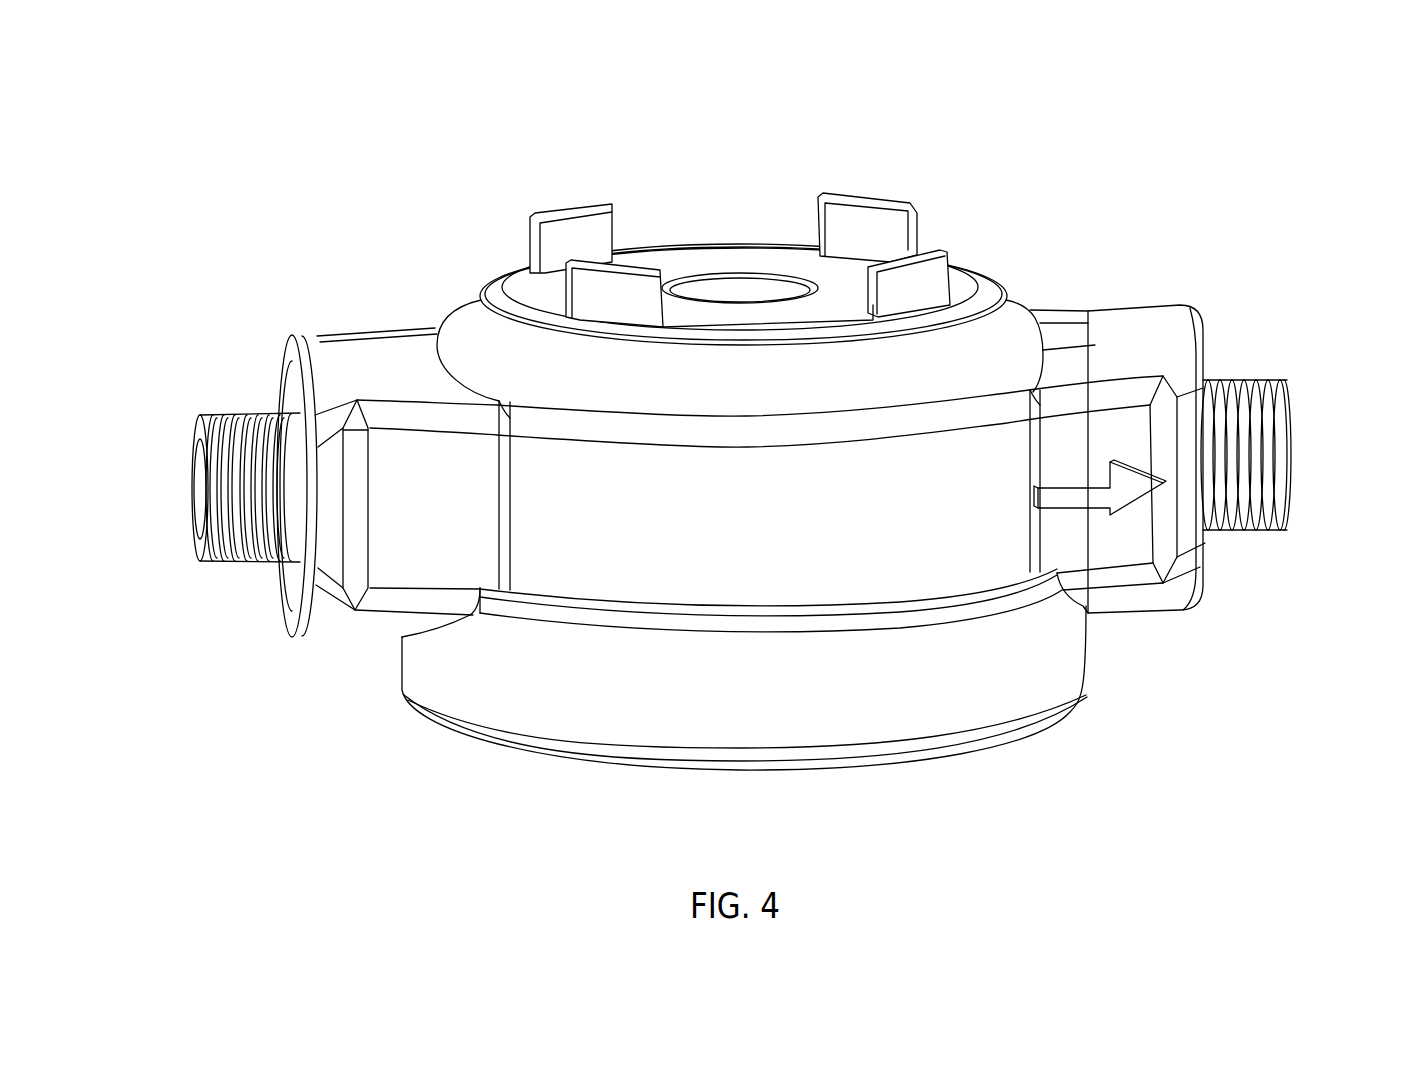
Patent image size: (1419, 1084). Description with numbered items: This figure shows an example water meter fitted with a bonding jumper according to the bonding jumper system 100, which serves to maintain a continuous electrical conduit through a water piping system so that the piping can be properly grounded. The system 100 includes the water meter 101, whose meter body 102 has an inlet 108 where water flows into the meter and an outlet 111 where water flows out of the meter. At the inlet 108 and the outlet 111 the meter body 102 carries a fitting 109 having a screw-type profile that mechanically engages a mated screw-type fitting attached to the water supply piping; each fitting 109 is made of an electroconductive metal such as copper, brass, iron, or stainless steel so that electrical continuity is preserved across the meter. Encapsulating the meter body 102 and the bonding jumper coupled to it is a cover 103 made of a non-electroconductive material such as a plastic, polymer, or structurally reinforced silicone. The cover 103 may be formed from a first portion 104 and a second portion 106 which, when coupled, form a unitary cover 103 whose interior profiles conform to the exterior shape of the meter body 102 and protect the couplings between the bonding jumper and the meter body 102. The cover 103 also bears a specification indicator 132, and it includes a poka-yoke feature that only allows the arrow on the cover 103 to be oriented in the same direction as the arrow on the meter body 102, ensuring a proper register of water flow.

The bonding jumper system 100 is at (245, 114).
The water meter 101 is at (715, 226).
The meter body 102 is at (963, 268).
The cover 103 is at (448, 283).
The first portion 104 is at (963, 560).
The second portion 106 is at (287, 337).
The inlet 108 is at (233, 580).
The fitting 109 is at (192, 424).
The outlet 111 is at (1293, 381).
The specification indicator 132 is at (660, 567).